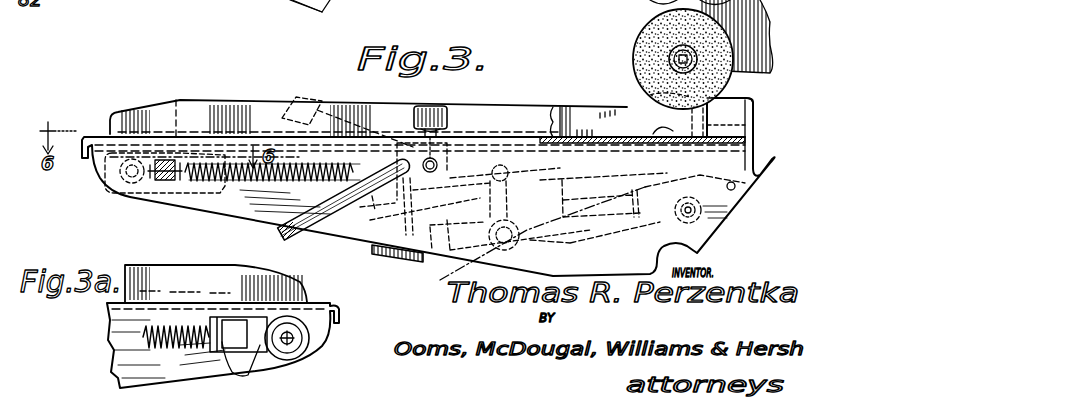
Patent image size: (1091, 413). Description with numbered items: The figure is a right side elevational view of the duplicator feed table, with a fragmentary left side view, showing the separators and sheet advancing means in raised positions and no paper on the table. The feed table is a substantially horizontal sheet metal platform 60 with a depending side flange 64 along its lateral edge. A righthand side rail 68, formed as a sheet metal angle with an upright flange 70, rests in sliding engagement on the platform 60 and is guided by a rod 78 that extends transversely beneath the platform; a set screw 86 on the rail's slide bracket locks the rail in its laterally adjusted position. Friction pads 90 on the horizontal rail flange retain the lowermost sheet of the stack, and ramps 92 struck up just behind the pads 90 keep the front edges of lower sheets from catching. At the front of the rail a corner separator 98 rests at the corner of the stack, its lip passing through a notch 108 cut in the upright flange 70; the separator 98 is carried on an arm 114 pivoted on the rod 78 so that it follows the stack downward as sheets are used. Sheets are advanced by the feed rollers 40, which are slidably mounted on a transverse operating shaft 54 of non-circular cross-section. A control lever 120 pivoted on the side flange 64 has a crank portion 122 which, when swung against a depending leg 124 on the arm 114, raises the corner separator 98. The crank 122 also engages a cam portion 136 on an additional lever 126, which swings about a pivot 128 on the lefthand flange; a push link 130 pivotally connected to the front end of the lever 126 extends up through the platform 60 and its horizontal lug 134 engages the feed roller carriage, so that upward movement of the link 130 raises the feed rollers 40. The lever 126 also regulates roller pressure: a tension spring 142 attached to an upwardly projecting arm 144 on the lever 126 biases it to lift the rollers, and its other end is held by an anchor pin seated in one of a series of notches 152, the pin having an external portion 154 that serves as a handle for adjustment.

In FIG. 3, the feed rollers 40 is at (634, 51).
In FIG. 3, the transverse operating shaft 54 is at (672, 59).
In FIG. 3, the feed table platform 60 is at (97, 134).
In FIG. 3A, the feed table platform 60 is at (330, 302).
In FIG. 3, the side flange 64 is at (238, 213).
In FIG. 3, the righthand side rail 68 is at (252, 106).
In FIG. 3A, the upright flange 70 is at (216, 283).
In FIG. 3, the guide rod 78 is at (439, 161).
In FIG. 3, the set screw 86 is at (449, 110).
In FIG. 3, the friction pads 90 is at (666, 137).
In FIG. 3, the ramps 92 is at (640, 137).
In FIG. 3, the corner separator 98 is at (762, 93).
In FIG. 3, the notch 108 is at (703, 130).
In FIG. 3, the arm 114 is at (603, 202).
In FIG. 3, the control lever 120 is at (333, 4).
In FIG. 3, the crank portion 122 is at (386, 207).
In FIG. 3, the depending leg 124 is at (480, 214).
In FIG. 3, the lever 126 is at (568, 245).
In FIG. 3, the pivot 128 is at (527, 238).
In FIG. 3, the push link 130 is at (747, 208).
In FIG. 3, the horizontal lug 134 is at (656, 101).
In FIG. 3, the cam portion 136 is at (366, 256).
In FIG. 3, the tension spring 142 is at (200, 197).
In FIG. 3A, the tension spring 142 is at (110, 348).
In FIG. 3, the upwardly projecting arm 144 is at (510, 163).
In FIG. 3, the notches 152 is at (186, 100).
In FIG. 3A, the notches 152 is at (245, 373).
In FIG. 3, the external portion 154 is at (118, 183).
In FIG. 3A, the external portion 154 is at (312, 348).